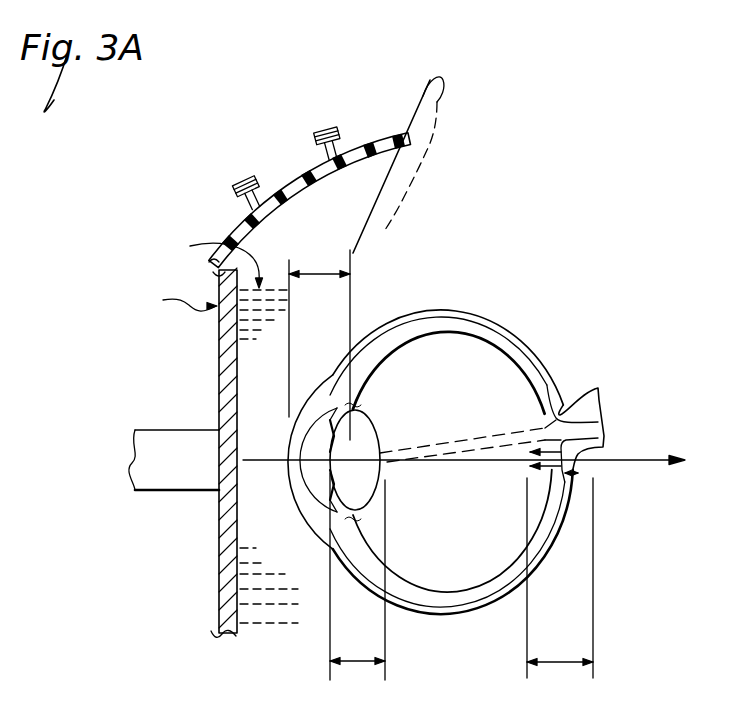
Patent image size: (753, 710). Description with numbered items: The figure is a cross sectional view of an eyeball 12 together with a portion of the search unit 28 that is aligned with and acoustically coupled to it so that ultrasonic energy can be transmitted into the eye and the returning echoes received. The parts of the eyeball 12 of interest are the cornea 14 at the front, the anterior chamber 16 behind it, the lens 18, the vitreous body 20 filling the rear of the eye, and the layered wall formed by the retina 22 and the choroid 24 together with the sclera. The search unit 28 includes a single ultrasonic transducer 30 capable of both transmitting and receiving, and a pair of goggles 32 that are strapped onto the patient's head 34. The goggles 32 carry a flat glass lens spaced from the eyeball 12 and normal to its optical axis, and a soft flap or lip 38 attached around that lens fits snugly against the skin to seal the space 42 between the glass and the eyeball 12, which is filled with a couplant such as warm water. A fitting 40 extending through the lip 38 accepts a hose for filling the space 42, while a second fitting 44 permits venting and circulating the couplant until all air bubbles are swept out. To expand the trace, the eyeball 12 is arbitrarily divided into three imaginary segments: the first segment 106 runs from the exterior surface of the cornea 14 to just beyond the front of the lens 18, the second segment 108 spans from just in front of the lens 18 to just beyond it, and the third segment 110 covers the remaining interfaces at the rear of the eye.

The eyeball 12 is at (462, 290).
The cornea 14 is at (295, 443).
The anterior chamber 16 is at (315, 462).
The lens 18 is at (353, 445).
The vitreous body 20 is at (542, 548).
The retina 22 is at (540, 545).
The choroid 24 is at (537, 574).
The search unit 28 is at (183, 537).
The ultrasonic transducer 30 is at (195, 477).
The goggles 32 is at (216, 335).
The patient's head 34 is at (424, 92).
The soft flap or lip 38 is at (369, 141).
The fitting 40 is at (262, 192).
The space 42 is at (260, 363).
The second fitting 44 is at (312, 151).
The first segment 106 is at (322, 276).
The second segment 108 is at (356, 664).
The third segment 110 is at (558, 664).